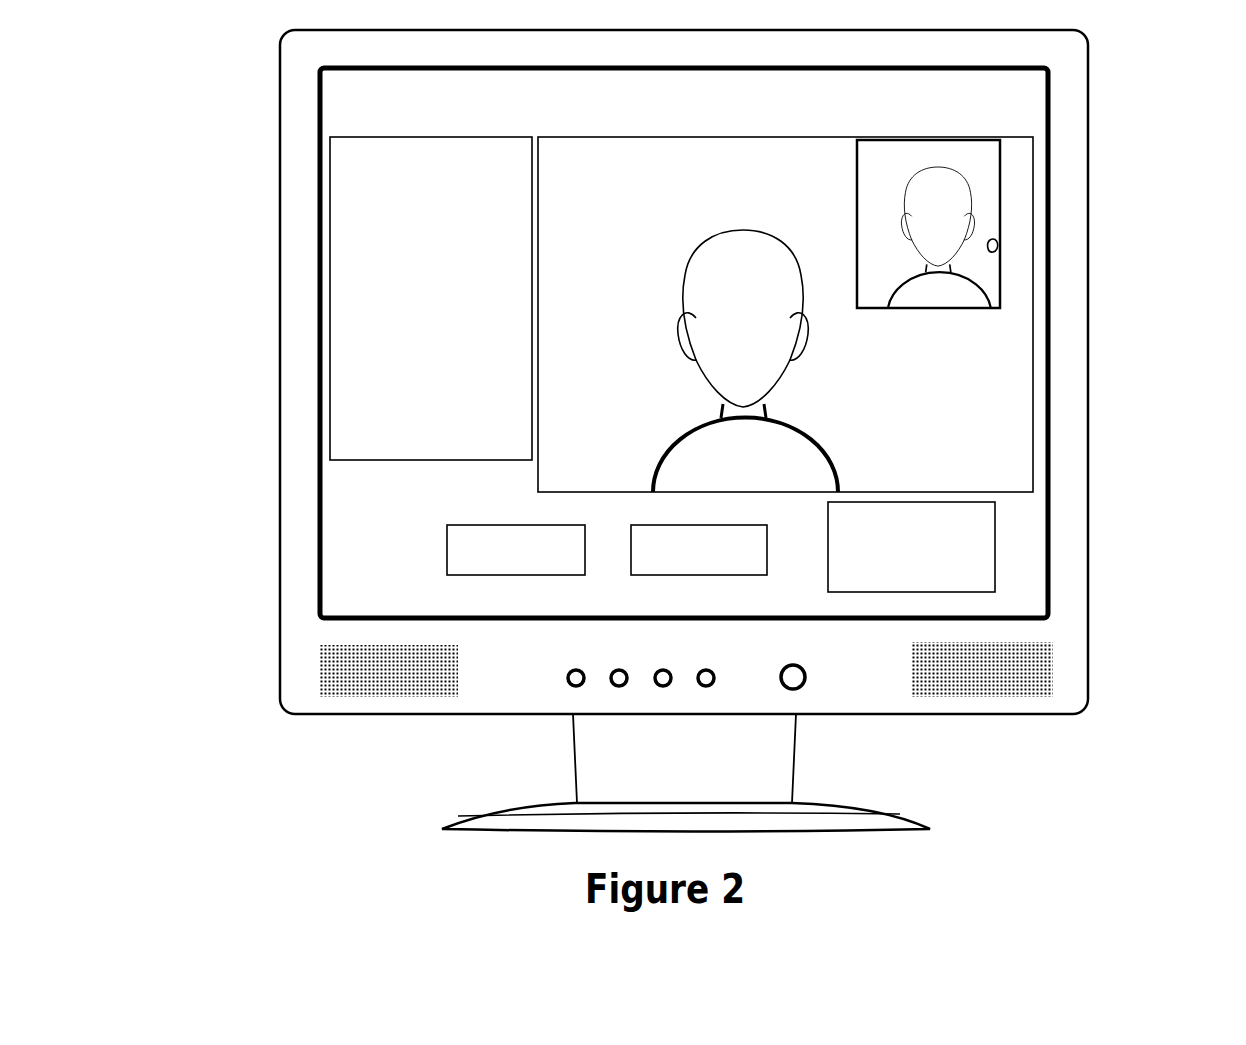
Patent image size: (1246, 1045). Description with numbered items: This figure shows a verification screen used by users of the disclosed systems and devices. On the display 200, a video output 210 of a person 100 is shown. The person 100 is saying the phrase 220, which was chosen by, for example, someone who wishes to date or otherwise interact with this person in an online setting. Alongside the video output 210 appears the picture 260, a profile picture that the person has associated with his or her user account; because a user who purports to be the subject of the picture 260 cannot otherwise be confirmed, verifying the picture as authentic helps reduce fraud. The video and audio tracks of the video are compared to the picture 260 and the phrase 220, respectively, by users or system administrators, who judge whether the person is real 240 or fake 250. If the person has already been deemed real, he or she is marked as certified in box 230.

The person 100 is at (694, 254).
The display 200 is at (1065, 323).
The video output 210 is at (985, 372).
The phrase 220 is at (330, 305).
The certified box 230 is at (997, 542).
The real 240 is at (447, 543).
The fake 250 is at (631, 552).
The picture 260 is at (992, 185).